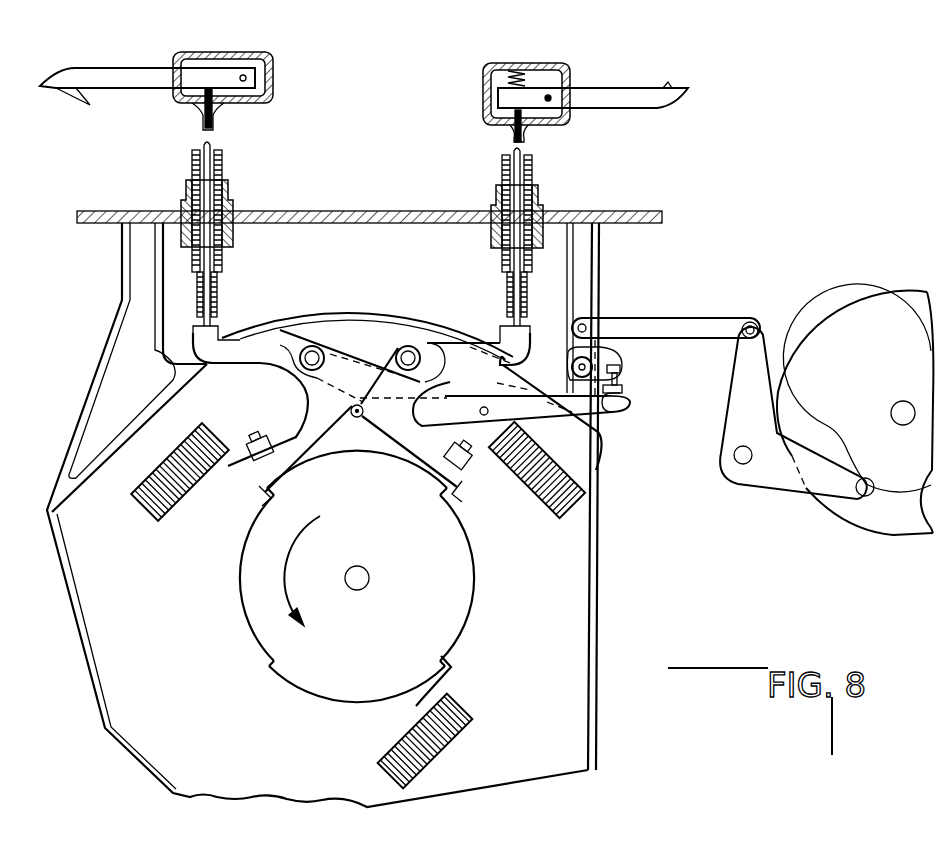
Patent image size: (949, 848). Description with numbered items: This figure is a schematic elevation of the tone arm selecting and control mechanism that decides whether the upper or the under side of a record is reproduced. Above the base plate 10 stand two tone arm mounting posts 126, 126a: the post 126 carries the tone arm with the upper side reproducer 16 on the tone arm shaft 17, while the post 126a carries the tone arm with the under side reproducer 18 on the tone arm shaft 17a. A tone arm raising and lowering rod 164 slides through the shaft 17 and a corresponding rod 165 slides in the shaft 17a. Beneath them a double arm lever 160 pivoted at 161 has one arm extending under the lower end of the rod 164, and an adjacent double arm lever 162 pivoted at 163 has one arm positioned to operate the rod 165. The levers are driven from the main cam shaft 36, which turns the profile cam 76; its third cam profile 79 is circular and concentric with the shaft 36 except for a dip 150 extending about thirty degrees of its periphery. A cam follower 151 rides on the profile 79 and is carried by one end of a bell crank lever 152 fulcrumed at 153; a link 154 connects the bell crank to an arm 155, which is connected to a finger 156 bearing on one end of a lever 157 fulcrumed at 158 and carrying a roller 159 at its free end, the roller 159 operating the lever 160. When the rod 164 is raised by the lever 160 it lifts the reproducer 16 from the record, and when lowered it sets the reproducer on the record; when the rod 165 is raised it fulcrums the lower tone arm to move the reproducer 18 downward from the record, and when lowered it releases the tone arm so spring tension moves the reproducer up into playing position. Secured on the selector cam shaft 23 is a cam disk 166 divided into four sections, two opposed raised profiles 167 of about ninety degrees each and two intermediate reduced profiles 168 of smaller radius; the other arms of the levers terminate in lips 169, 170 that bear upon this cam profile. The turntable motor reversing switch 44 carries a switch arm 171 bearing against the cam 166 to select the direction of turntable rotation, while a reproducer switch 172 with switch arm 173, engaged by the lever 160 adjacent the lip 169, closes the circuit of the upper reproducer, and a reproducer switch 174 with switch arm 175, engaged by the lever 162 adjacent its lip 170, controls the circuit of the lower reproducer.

The base plate 10 is at (353, 213).
The upper side reproducer 16 is at (88, 103).
The under side reproducer 18 is at (668, 85).
The tone arm shaft 17 is at (190, 172).
The tone arm shaft 17a is at (500, 173).
The selector cam shaft 23 is at (352, 587).
The cam shaft 36 is at (902, 412).
The motor reversing switch 44 is at (440, 733).
The profile cam 76 is at (840, 503).
The cam profile 79 is at (850, 377).
The tone arm mounting post 126 is at (192, 158).
The tone arm mounting post 126a is at (533, 172).
The dip 150 is at (843, 440).
The cam follower 151 is at (865, 492).
The bell crank lever 152 is at (728, 417).
The fulcrum 153 is at (740, 462).
The link 154 is at (693, 332).
The arm 155 is at (588, 353).
The finger 156 is at (624, 358).
The lever 157 is at (613, 410).
The fulcrum 158 is at (484, 407).
The roller 159 is at (356, 417).
The double arm lever 160 is at (210, 345).
The pivot 161 is at (408, 355).
The double arm lever 162 is at (487, 352).
The pivot 163 is at (313, 356).
The tone arm raising and lowering rod 164 is at (221, 157).
The tone arm raising and lowering rod 165 is at (502, 155).
The cam disk 166 is at (379, 577).
The raised profiles 167 is at (343, 453).
The reduced profiles 168 is at (240, 570).
The lip 169 is at (268, 488).
The lip 170 is at (449, 484).
The switch arm 171 is at (447, 673).
The reproducer switch 172 is at (170, 487).
The switch arm 173 is at (240, 438).
The reproducer switch 174 is at (557, 503).
The switch arm 175 is at (486, 466).